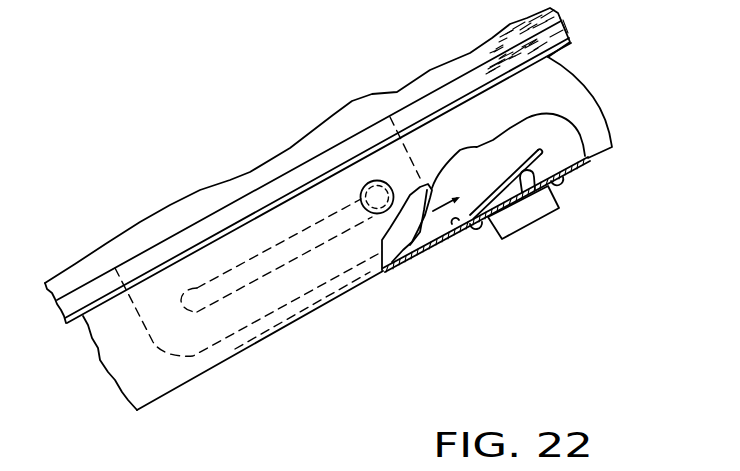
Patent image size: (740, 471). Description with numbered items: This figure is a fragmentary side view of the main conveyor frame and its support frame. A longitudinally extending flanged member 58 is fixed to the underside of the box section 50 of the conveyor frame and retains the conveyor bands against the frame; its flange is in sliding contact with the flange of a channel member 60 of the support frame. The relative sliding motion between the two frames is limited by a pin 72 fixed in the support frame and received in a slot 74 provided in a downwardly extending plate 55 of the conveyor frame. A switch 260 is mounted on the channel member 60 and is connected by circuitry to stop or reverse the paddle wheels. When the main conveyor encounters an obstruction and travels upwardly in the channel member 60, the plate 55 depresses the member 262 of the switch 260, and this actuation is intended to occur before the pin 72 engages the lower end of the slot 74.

The box section 50 is at (148, 231).
The flanged member 58 is at (263, 200).
The channel member 60 is at (588, 160).
The pin 72 is at (390, 187).
The slot 74 is at (283, 268).
The downwardly extending plate 55 is at (402, 232).
The member of the switch 262 is at (492, 192).
The switch 260 is at (552, 217).